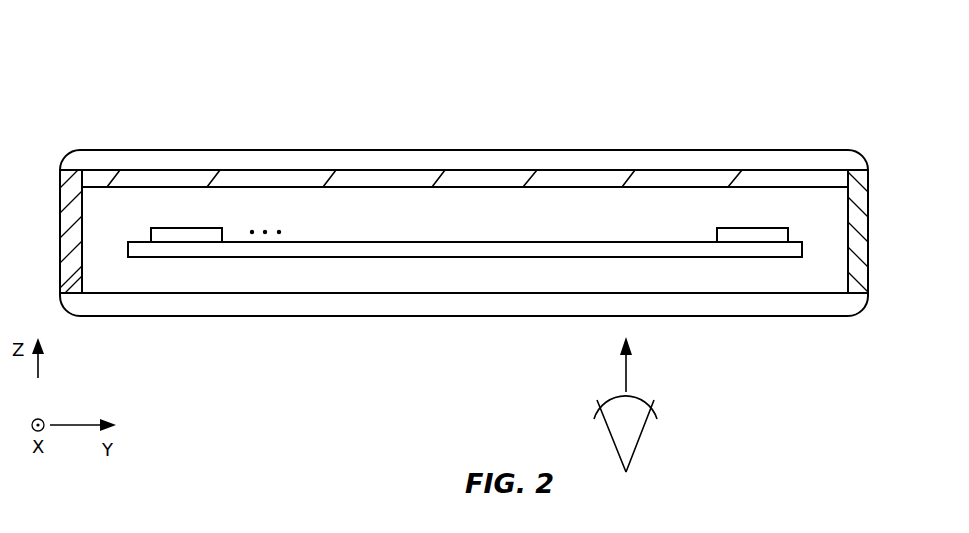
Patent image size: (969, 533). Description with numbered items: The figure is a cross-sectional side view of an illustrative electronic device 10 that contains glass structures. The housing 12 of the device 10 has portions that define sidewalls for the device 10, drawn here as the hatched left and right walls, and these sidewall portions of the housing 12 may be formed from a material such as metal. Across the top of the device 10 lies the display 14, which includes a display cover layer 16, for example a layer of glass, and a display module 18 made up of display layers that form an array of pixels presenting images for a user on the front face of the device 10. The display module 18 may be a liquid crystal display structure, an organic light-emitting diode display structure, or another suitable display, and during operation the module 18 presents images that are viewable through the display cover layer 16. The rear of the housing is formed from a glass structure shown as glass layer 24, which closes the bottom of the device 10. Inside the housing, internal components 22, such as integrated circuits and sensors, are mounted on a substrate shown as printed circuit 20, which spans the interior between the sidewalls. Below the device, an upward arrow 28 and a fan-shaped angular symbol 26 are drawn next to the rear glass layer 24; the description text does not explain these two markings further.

The device 10 is at (655, 70).
The housing 12 is at (64, 255).
The display 14 is at (435, 134).
The display cover layer 16 is at (207, 150).
The display module 18 is at (278, 177).
The printed circuit 20 is at (232, 254).
The components 22 is at (166, 234).
The glass layer 24 is at (281, 308).
The angular field of view 26 is at (632, 440).
The direction arrow 28 is at (628, 370).